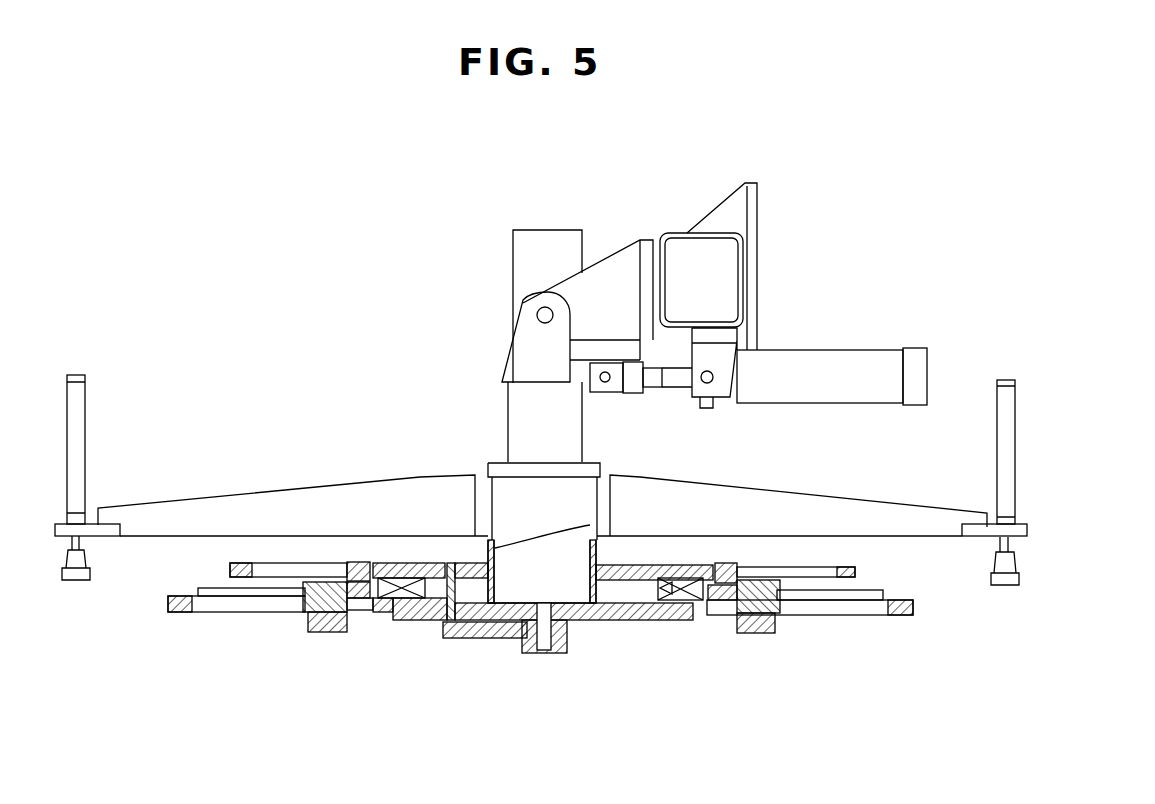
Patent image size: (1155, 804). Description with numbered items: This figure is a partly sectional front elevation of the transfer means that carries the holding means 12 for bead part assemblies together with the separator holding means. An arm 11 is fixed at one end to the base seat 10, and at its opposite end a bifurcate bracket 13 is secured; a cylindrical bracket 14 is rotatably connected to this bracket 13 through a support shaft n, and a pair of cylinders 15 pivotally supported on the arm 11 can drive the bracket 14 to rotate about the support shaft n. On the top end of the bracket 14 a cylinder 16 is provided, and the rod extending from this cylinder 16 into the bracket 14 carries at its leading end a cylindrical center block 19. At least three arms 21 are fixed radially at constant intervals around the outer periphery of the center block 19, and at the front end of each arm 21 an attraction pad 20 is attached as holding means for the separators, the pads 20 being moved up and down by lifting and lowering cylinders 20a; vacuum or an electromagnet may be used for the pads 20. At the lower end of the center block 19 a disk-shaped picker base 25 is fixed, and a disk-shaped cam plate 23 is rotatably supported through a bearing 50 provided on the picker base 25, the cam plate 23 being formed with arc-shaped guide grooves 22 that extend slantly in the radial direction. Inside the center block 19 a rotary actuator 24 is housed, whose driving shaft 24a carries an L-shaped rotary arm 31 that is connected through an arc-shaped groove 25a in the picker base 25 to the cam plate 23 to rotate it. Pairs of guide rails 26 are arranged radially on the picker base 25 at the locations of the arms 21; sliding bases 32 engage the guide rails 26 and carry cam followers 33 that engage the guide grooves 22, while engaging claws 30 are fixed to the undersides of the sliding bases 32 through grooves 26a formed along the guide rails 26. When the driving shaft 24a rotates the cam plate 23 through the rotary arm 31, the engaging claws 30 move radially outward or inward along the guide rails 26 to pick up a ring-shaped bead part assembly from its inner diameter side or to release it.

The base seat 10 is at (752, 183).
The arm 11 is at (685, 235).
The holding means 12 is at (369, 379).
The bifurcate bracket 13 is at (610, 268).
The cylindrical bracket 14 is at (523, 352).
The cylinder 15 is at (878, 358).
The cylinder 16 is at (527, 262).
The support shaft n is at (537, 315).
The center block 19 is at (592, 470).
The attraction pad 20 is at (70, 583).
The lifting and lowering cylinder 20a is at (90, 415).
The arm 21 is at (278, 500).
The guide groove 22 is at (272, 577).
The cam plate 23 is at (855, 582).
The rotary actuator 24 is at (587, 605).
The driving shaft 24a is at (540, 655).
The picker base 25 is at (672, 620).
The arc-shaped groove 25a is at (442, 622).
The guide rail 26 is at (207, 597).
The groove 26a is at (232, 605).
The engaging claw 30 is at (325, 632).
The L-shaped rotary arm 31 is at (478, 638).
The sliding base 32 is at (360, 607).
The cam follower 33 is at (363, 562).
The bearing 50 is at (410, 580).